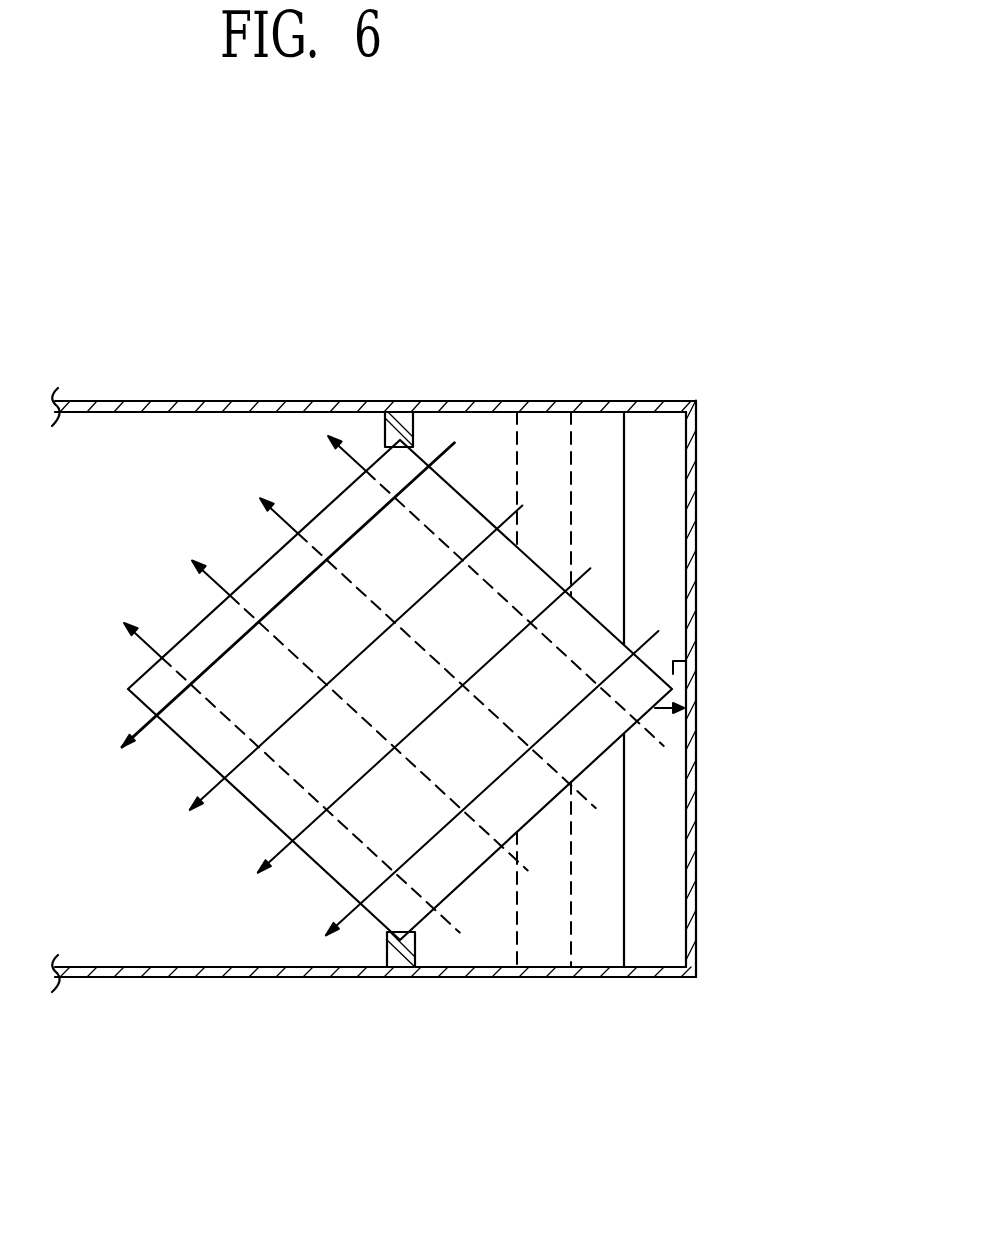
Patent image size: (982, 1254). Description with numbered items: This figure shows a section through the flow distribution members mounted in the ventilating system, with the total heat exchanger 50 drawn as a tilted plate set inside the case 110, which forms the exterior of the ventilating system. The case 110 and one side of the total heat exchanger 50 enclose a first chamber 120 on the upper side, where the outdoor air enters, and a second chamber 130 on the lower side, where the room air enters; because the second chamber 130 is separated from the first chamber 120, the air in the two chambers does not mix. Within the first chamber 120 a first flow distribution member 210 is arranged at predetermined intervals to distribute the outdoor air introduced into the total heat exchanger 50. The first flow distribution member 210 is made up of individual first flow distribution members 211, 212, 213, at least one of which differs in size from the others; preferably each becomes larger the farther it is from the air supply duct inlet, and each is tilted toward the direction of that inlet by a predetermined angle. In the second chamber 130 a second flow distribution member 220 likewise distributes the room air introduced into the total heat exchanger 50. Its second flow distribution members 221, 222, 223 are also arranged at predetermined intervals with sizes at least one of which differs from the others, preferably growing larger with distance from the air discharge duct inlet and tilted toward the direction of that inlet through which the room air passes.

The total heat exchanger 50 is at (278, 804).
The case 110 is at (698, 584).
The first chamber 120 is at (650, 525).
The second chamber 130 is at (650, 852).
The first flow distribution member 210 is at (587, 277).
The first flow distribution member 211 is at (517, 434).
The first flow distribution member 212 is at (571, 443).
The first flow distribution member 213 is at (624, 452).
The second flow distribution member 220 is at (813, 1027).
The second flow distribution member 221 is at (518, 943).
The second flow distribution member 222 is at (572, 933).
The second flow distribution member 223 is at (626, 930).